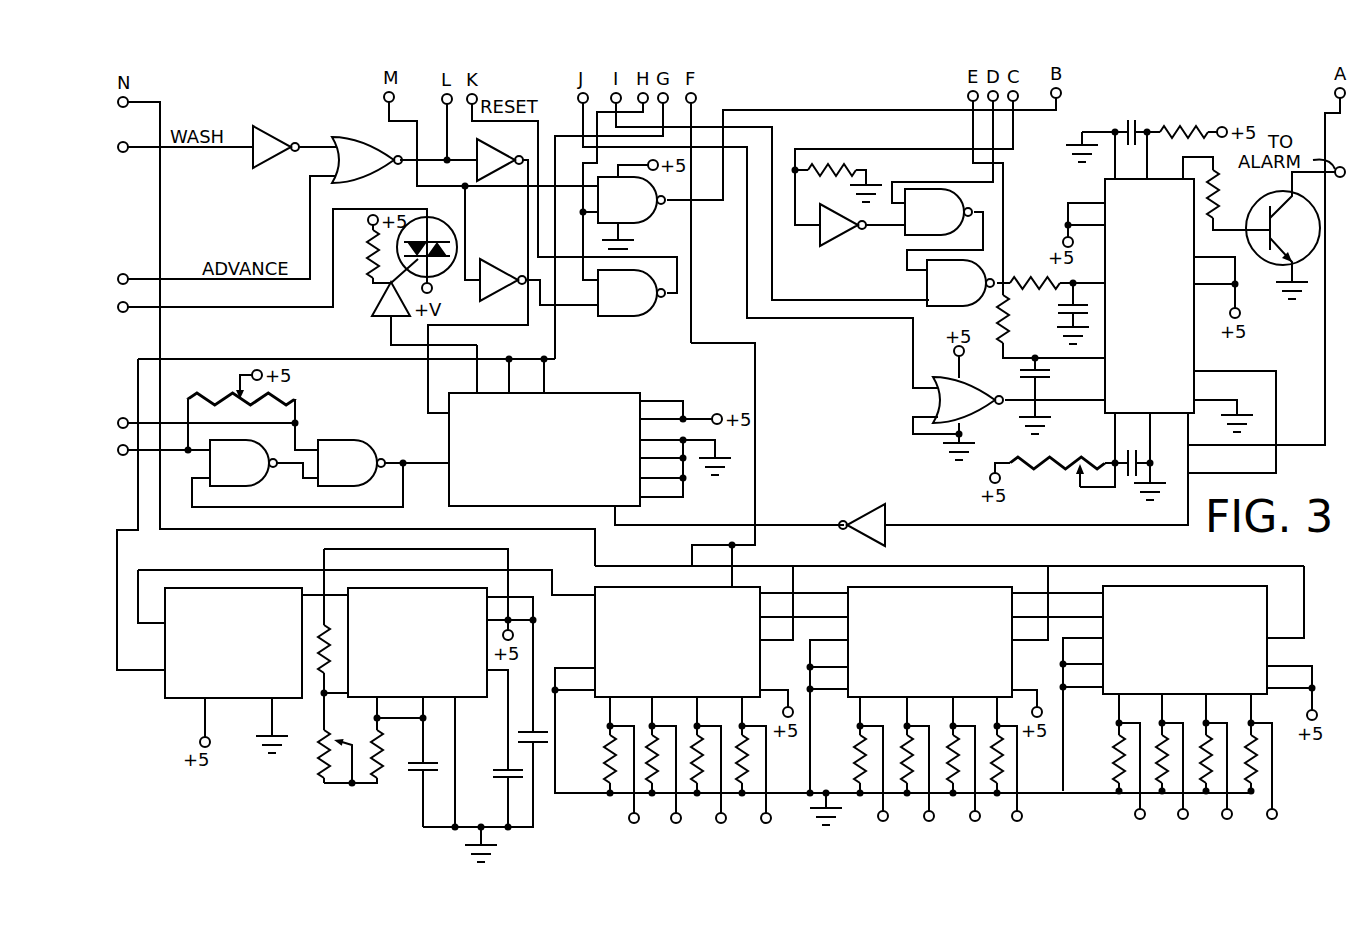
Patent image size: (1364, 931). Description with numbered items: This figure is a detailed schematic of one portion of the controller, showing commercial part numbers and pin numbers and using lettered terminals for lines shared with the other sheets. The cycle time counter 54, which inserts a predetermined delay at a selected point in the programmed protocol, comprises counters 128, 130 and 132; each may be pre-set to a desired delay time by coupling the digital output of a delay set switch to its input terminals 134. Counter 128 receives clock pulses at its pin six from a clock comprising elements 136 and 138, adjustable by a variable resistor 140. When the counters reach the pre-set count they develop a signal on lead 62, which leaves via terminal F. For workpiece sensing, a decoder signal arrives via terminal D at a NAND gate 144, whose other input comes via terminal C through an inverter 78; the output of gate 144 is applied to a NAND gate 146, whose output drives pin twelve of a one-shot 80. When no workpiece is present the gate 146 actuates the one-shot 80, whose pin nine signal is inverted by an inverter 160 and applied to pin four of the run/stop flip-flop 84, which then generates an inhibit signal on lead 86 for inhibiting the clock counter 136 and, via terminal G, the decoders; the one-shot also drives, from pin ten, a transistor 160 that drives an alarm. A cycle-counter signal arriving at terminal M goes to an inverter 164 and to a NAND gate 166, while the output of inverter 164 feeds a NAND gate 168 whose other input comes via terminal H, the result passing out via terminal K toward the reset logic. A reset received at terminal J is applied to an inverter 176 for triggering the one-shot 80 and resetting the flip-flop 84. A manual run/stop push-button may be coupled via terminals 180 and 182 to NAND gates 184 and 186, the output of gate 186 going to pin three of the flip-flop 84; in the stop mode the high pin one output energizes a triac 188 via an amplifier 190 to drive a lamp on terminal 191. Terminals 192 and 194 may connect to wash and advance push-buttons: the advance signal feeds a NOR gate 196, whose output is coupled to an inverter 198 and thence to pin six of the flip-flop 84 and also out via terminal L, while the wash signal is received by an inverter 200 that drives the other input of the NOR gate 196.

The cycle time counter 54 is at (1044, 560).
The lead 62 is at (757, 532).
The inverter 78 is at (838, 241).
The one-shot 80 is at (1164, 377).
The run/stop flip-flop 84 is at (556, 424).
The lead 86 is at (532, 353).
The counter 128 is at (697, 613).
The counter 130 is at (950, 613).
The counter 132 is at (1205, 613).
The input terminals 134 is at (777, 822).
The clock counter 136 is at (252, 613).
The clock element 138 is at (435, 613).
The variable resistor 140 is at (318, 756).
The NAND gate 144 is at (949, 223).
The NAND gate 146 is at (971, 294).
The inverter / transistor 160 is at (1278, 196).
The inverter 164 is at (498, 260).
The NAND gate 166 is at (642, 211).
The NAND gate 168 is at (642, 304).
The inverter 176 is at (983, 411).
The terminal 180 is at (124, 418).
The terminal 182 is at (128, 455).
The NAND gate 184 is at (253, 474).
The NAND gate 186 is at (361, 474).
The triac 188 is at (437, 216).
The amplifier 190 is at (378, 303).
The terminal 191 is at (126, 312).
The terminal 192 is at (128, 152).
The terminal 194 is at (140, 264).
The NOR gate 196 is at (385, 171).
The inverter 198 is at (484, 143).
The inverter 200 is at (268, 134).